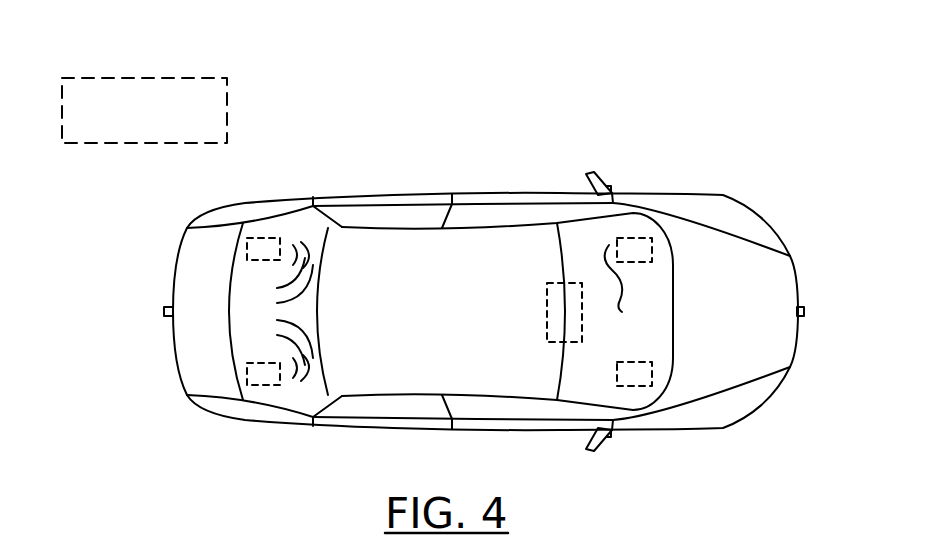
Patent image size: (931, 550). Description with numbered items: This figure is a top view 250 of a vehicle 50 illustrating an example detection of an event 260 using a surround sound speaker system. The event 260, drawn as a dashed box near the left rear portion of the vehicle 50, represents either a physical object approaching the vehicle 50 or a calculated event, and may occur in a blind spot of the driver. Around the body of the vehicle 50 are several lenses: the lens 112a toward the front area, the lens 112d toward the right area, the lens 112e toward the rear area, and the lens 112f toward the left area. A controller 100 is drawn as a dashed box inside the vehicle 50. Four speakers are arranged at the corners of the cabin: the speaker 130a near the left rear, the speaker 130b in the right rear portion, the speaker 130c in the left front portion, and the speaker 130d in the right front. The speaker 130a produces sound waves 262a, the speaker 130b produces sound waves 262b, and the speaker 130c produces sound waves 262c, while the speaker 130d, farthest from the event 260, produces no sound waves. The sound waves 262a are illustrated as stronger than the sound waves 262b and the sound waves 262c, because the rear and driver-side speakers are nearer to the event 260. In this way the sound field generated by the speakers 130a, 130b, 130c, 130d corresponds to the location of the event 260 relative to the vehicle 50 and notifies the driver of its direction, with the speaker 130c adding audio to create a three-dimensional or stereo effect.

The top view 250 is at (393, 44).
The event 260 is at (110, 79).
The vehicle 50 is at (723, 197).
The controller 100 is at (547, 300).
The lens 112a is at (803, 308).
The lens 112d is at (612, 440).
The lens 112e is at (163, 313).
The lens 112f is at (608, 183).
The speaker 130a is at (264, 238).
The speaker 130b is at (262, 386).
The speaker 130c is at (652, 248).
The speaker 130d is at (652, 377).
The sound waves 262a is at (321, 263).
The sound waves 262b is at (307, 360).
The sound waves 262c is at (620, 289).